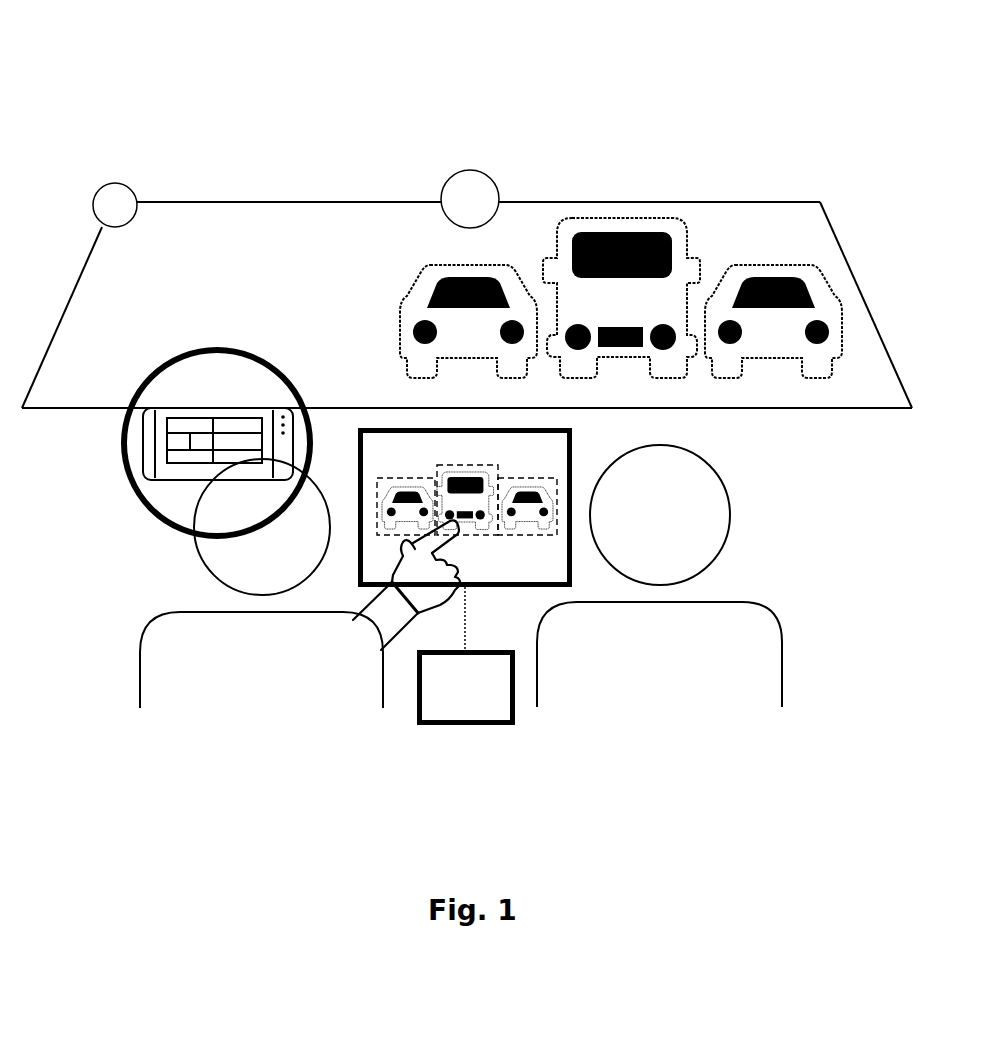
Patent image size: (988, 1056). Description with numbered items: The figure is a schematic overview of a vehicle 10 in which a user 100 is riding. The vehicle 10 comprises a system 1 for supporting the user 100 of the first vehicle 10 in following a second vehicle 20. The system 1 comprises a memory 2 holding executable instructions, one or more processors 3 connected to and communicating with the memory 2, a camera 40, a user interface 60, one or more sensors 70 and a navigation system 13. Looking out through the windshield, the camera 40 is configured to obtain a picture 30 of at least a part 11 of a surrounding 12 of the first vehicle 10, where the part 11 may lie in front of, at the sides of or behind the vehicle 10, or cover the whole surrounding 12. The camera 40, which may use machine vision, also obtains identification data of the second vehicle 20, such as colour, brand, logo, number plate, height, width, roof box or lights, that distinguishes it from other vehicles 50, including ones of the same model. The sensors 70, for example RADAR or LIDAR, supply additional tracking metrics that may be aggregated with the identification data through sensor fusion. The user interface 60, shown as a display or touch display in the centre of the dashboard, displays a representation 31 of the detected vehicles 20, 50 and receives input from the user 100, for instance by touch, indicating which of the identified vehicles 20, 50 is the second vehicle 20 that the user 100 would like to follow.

The system 1 is at (453, 743).
The memory 2 is at (466, 655).
The processors 3 is at (466, 655).
The vehicle 10 is at (145, 105).
The part of the surrounding 11 is at (467, 252).
The surrounding 12 is at (730, 232).
The navigation system 13 is at (180, 422).
The second vehicle 20 is at (598, 215).
The picture 30 is at (385, 338).
The representation 31 is at (405, 450).
The camera 40 is at (457, 176).
The other vehicles 50 is at (432, 265).
The user interface 60 is at (540, 557).
The sensors 70 is at (110, 203).
The user 100 is at (300, 583).